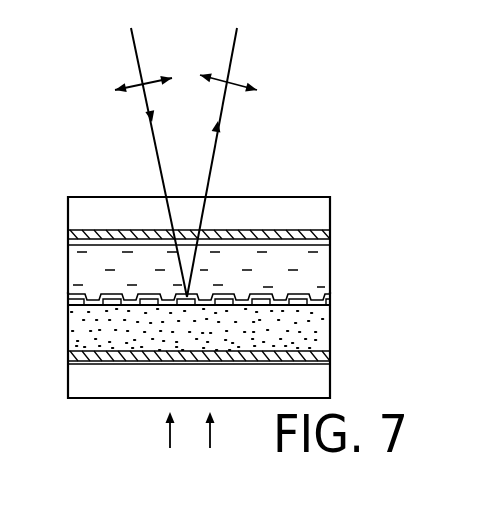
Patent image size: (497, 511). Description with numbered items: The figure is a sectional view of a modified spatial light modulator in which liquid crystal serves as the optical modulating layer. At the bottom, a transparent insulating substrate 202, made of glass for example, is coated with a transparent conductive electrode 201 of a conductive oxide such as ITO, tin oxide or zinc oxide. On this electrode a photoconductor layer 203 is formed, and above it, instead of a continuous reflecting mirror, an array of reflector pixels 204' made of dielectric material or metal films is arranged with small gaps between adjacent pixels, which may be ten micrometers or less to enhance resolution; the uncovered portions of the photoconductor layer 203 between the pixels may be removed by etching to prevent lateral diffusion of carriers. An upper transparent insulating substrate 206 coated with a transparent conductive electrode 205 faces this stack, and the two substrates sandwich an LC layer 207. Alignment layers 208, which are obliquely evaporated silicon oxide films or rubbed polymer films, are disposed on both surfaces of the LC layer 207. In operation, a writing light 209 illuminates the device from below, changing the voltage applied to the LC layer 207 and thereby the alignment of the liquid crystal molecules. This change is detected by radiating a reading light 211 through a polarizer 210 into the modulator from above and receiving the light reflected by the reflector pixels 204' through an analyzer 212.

The transparent conductive electrode 201 is at (327, 359).
The transparent insulating substrate 202 is at (76, 377).
The photoconductor layer 203 is at (322, 333).
The array of reflector pixels 204' is at (234, 312).
The transparent conductive electrode 205 is at (325, 237).
The transparent insulating substrate 206 is at (323, 213).
The LC layer 207 is at (325, 271).
The alignment layers 208 is at (66, 243).
The writing light 209 is at (241, 448).
The polarizer 210 is at (122, 90).
The reading light 211 is at (132, 46).
The analyzer 212 is at (247, 88).